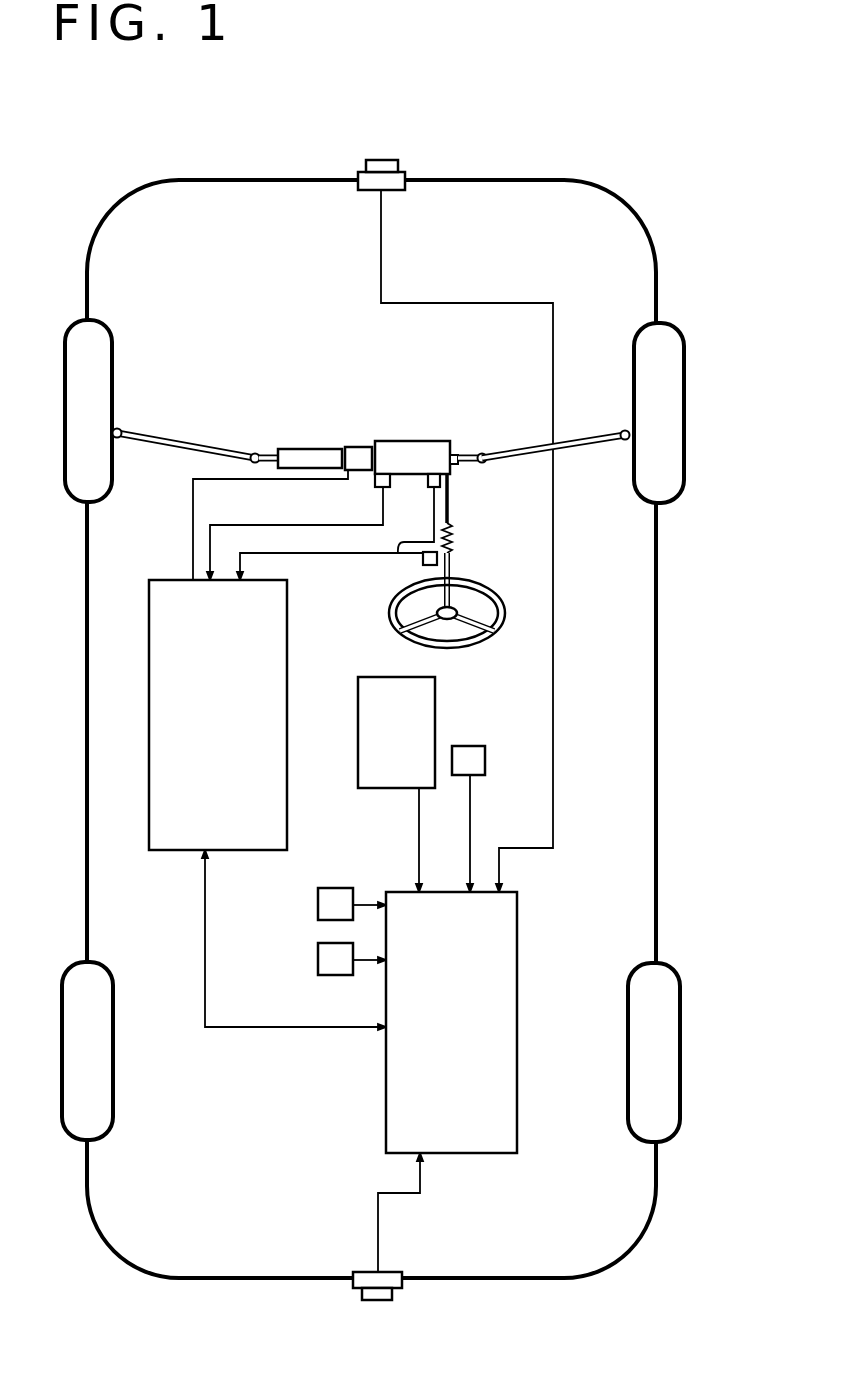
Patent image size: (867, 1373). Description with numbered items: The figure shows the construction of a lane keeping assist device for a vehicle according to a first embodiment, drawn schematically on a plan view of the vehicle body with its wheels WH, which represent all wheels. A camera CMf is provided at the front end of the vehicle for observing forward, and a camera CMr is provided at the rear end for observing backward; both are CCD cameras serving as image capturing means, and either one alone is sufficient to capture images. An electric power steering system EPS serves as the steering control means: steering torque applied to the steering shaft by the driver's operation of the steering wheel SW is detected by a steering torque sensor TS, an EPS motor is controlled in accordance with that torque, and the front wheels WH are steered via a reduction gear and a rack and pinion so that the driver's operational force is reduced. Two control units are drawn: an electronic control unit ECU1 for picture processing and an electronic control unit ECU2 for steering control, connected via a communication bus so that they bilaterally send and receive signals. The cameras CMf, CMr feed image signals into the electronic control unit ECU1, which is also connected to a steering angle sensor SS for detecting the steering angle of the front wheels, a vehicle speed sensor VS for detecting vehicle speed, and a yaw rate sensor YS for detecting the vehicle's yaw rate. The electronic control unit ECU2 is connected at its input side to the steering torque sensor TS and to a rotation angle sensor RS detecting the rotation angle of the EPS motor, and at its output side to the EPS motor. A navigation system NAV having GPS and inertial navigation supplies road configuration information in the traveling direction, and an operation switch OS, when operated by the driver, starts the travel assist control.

The wheel WH is at (680, 326).
The camera CMf is at (405, 166).
The camera CMr is at (392, 1298).
The electric power steering system EPS is at (390, 441).
The rotation angle sensor RS is at (372, 483).
The steering angle sensor SS is at (428, 483).
The steering torque sensor TS is at (423, 560).
The steering wheel SW is at (497, 630).
The electronic control unit for picture processing ECU1 is at (451, 1022).
The electronic control unit for steering control ECU2 is at (218, 715).
The navigation system NAV is at (396, 732).
The operation switch OS is at (467, 746).
The vehicle speed sensor VS is at (345, 888).
The yaw rate sensor YS is at (347, 975).